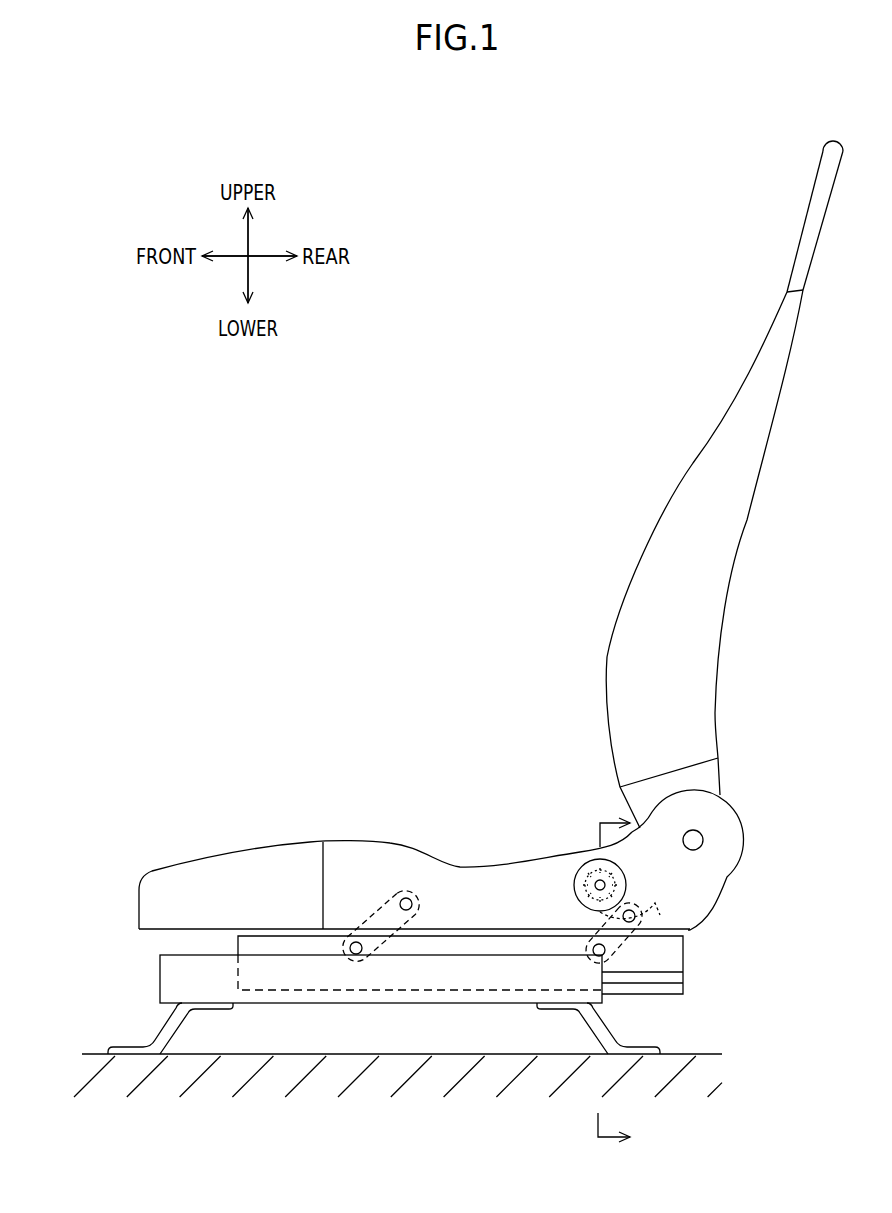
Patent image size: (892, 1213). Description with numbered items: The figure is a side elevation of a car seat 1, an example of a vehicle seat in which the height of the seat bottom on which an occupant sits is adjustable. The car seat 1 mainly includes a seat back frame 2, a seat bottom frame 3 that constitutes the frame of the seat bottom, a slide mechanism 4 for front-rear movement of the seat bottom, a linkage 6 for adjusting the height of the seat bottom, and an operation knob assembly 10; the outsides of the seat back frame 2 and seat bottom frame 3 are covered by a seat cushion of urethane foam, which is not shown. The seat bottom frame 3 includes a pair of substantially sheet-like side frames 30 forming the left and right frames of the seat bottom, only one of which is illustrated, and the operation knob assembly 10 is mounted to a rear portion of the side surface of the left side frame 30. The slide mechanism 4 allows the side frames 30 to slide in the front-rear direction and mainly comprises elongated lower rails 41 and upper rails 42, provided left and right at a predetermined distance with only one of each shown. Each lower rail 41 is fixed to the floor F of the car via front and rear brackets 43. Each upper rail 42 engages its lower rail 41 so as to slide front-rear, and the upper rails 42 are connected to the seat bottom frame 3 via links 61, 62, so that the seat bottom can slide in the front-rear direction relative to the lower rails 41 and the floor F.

The car seat 1 is at (422, 470).
The seat back frame 2 is at (690, 462).
The seat bottom frame 3 is at (414, 840).
The side frame 30 is at (276, 846).
The slide mechanism 4 is at (424, 978).
The lower rail 41 is at (159, 972).
The upper rail 42 is at (685, 951).
The bracket 43 is at (128, 1050).
The linkage 6 is at (556, 876).
The link 61 is at (384, 905).
The link 62 is at (650, 920).
The operation knob assembly 10 is at (572, 868).
The floor F is at (690, 1055).